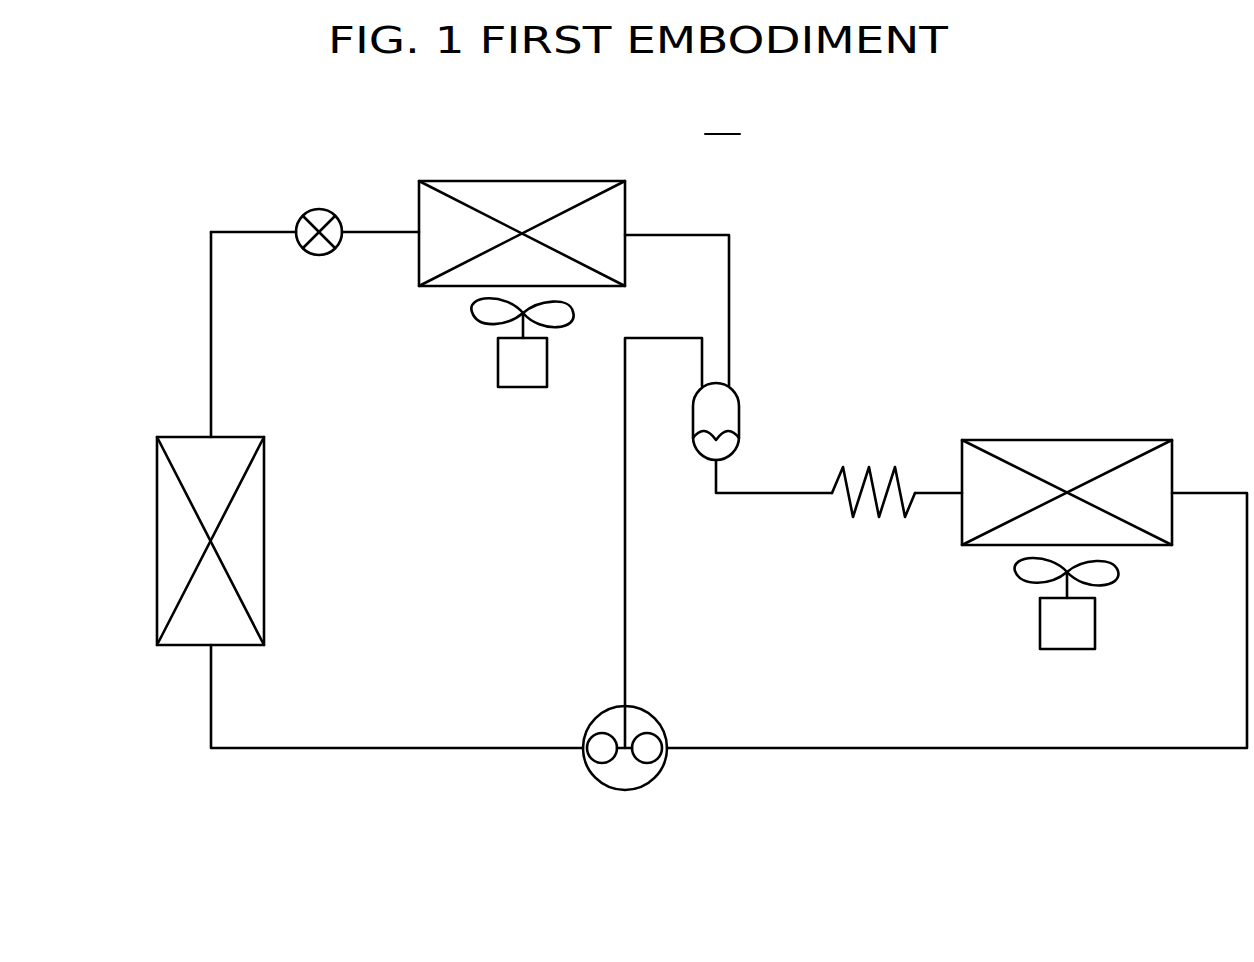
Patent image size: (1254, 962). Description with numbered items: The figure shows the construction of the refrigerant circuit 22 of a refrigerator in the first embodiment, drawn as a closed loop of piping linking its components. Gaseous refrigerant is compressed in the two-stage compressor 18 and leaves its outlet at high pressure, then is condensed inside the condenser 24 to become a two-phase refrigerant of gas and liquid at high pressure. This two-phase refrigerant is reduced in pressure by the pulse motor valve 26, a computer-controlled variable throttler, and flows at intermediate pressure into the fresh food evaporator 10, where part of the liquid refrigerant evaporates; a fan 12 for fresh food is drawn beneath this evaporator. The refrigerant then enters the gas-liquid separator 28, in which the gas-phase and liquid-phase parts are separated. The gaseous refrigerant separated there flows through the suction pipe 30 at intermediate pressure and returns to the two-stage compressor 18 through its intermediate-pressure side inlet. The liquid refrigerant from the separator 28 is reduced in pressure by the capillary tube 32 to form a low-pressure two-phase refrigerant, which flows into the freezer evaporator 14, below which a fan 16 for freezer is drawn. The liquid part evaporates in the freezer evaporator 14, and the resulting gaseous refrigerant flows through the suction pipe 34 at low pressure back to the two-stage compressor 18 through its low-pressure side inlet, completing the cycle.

The fresh food evaporator 10 is at (510, 180).
The fan for fresh food 12 is at (512, 390).
The freezer evaporator 14 is at (1088, 437).
The fan for freezer 16 is at (1096, 622).
The two-stage compressor 18 is at (624, 790).
The refrigerant circuit 22 is at (722, 121).
The condenser 24 is at (266, 597).
The pulse motor valve 26 is at (320, 208).
The gas-liquid separator 28 is at (741, 403).
The suction pipe 30 is at (627, 636).
The capillary tube 32 is at (879, 520).
The suction pipe 34 is at (958, 757).